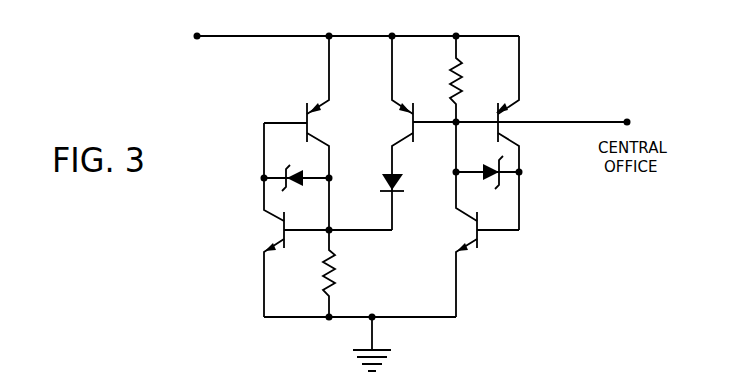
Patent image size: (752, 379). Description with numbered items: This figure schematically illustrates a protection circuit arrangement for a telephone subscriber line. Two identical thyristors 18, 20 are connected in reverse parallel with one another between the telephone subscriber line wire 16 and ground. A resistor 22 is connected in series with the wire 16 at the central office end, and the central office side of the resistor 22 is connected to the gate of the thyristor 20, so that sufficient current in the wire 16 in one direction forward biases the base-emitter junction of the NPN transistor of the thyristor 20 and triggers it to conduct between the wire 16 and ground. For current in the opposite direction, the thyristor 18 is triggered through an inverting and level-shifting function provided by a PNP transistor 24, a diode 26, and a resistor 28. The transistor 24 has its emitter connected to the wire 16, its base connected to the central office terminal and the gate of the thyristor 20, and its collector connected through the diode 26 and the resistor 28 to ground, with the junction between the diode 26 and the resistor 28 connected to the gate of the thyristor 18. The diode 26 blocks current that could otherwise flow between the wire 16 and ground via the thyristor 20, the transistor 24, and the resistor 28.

The telephone subscriber line wire 16 is at (273, 36).
The thyristor 18 is at (244, 178).
The thyristor 20 is at (523, 260).
The resistor 22 is at (458, 80).
The PNP transistor 24 is at (404, 122).
The diode 26 is at (397, 183).
The resistor 28 is at (332, 272).